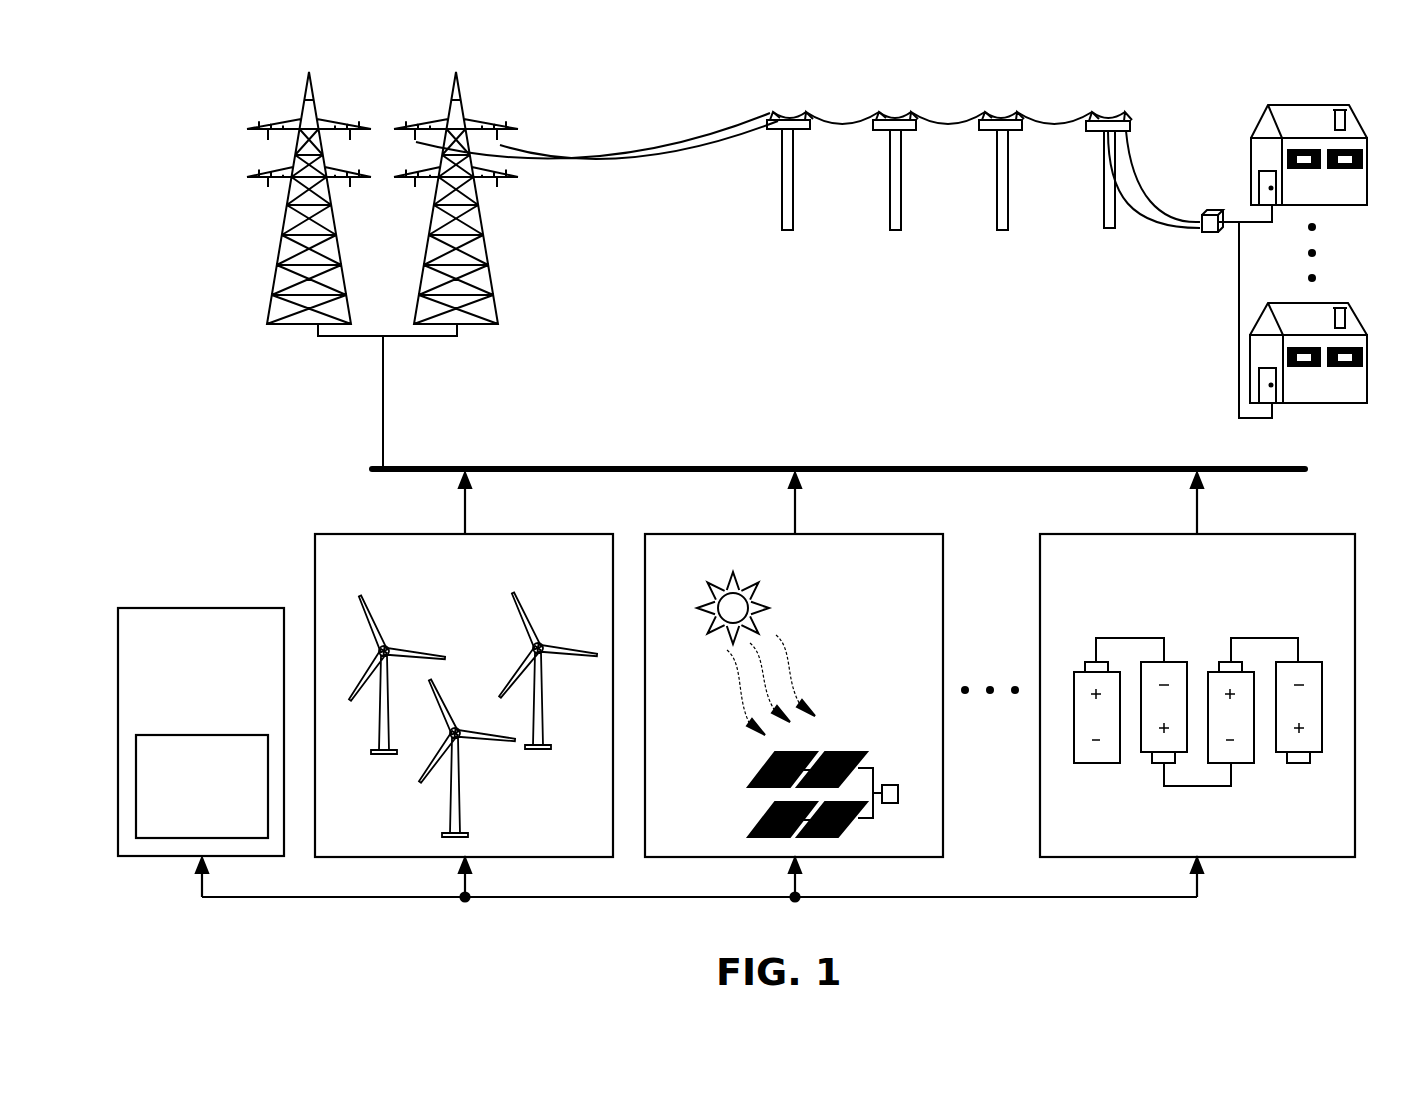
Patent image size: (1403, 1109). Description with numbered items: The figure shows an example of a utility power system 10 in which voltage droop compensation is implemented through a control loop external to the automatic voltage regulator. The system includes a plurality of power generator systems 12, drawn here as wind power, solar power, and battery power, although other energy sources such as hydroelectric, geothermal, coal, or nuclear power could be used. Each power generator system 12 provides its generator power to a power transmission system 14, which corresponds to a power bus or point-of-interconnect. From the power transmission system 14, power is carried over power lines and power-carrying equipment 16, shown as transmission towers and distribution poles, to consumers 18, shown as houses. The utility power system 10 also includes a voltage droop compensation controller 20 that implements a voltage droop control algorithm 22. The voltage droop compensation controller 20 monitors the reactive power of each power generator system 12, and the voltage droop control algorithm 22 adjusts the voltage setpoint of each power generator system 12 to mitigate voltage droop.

The utility power system 10 is at (212, 92).
The power generator systems 12 is at (547, 533).
The power transmission system 14 is at (650, 467).
The power lines and power-carrying equipment 16 is at (560, 292).
The consumers 18 is at (1222, 104).
The voltage droop compensation controller 20 is at (235, 607).
The voltage droop control algorithm 22 is at (180, 838).